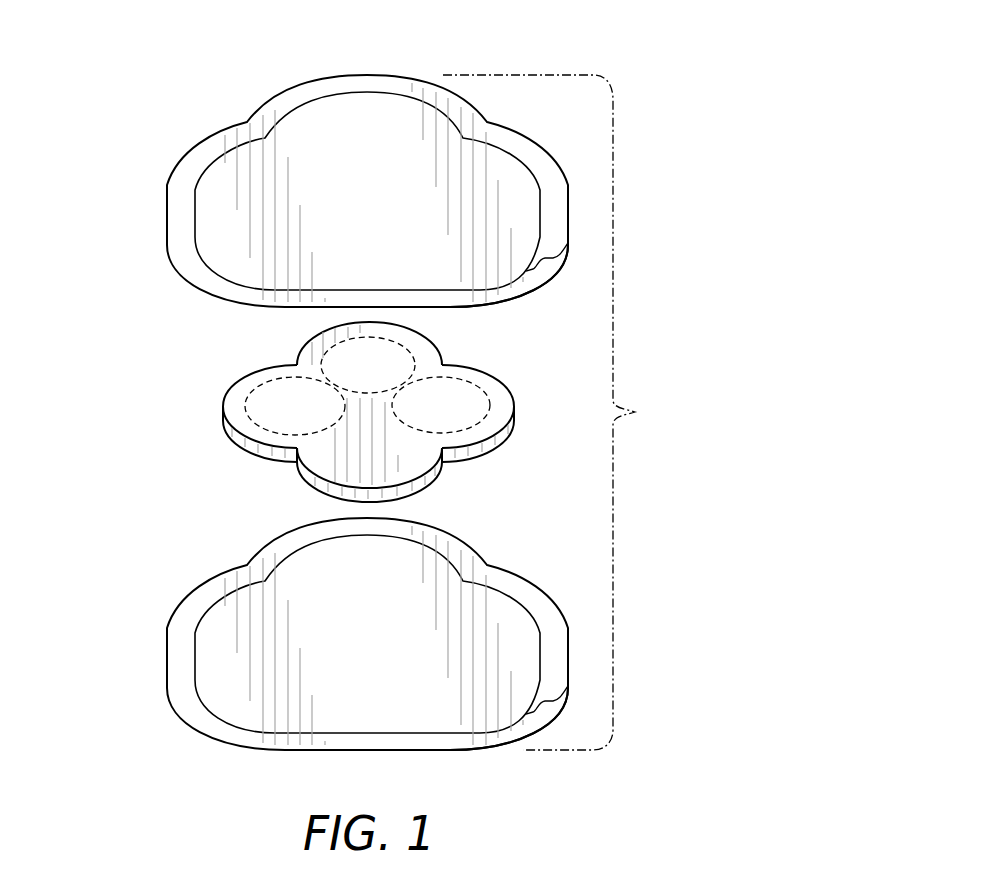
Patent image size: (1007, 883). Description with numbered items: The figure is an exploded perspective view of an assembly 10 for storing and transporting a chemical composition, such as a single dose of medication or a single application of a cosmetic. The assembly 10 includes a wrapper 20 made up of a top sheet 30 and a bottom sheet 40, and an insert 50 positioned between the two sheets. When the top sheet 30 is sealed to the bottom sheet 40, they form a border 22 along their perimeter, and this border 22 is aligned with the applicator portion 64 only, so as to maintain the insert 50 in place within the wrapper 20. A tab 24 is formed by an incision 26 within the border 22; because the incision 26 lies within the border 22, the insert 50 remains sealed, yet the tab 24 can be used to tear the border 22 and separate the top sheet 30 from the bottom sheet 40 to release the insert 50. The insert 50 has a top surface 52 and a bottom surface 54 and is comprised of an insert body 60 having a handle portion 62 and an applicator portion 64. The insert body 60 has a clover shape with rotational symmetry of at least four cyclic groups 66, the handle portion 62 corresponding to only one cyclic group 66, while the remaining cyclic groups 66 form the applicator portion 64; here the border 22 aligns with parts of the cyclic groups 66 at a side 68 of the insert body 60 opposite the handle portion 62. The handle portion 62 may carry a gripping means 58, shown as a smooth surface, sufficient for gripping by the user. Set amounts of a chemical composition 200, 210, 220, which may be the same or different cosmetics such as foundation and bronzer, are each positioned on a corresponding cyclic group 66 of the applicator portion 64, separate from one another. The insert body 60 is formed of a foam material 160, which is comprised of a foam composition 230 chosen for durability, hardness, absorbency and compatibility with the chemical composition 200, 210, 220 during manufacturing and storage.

The assembly 10 is at (557, 412).
The wrapper 20 is at (165, 202).
The border 22 is at (203, 150).
The tab 24 is at (557, 267).
The incision 26 is at (553, 262).
The top sheet 30 is at (302, 118).
The bottom sheet 40 is at (225, 740).
The insert 50 is at (366, 421).
The top surface 52 is at (267, 378).
The bottom surface 54 is at (297, 463).
The gripping means 58 is at (402, 472).
The insert body 60 is at (512, 415).
The handle portion 62 is at (338, 475).
The applicator portion 64 is at (423, 370).
The cyclic group 66 is at (317, 335).
The side 68 is at (237, 382).
The foam material 160 is at (460, 445).
The chemical composition 200 is at (258, 418).
The chemical composition 210 is at (349, 375).
The chemical composition 220 is at (422, 416).
The foam composition 230 is at (260, 447).